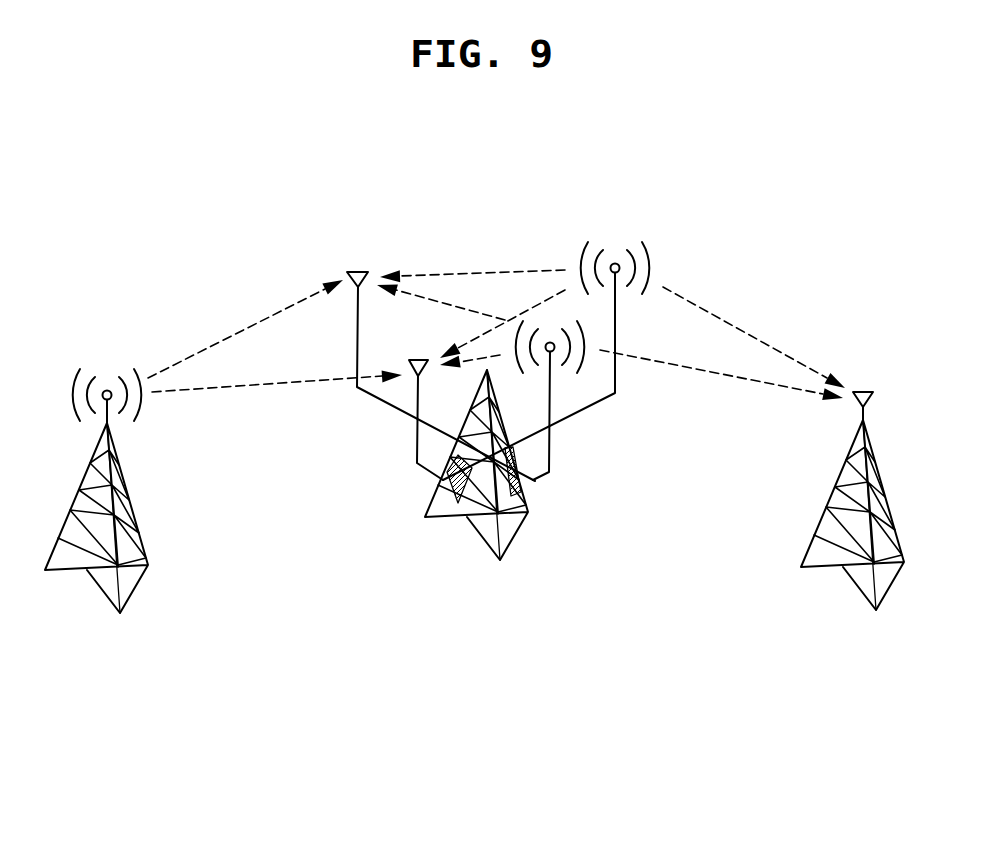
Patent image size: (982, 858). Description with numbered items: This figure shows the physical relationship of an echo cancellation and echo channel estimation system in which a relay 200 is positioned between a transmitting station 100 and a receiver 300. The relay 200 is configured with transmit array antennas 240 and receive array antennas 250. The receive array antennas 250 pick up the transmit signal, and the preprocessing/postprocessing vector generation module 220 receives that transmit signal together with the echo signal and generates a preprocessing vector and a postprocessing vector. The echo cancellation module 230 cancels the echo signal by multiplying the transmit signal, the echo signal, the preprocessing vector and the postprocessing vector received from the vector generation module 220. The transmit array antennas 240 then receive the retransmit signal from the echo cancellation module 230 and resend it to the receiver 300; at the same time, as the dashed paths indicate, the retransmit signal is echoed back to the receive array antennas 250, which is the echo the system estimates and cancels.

The base station 100 is at (100, 590).
The relay 200 is at (477, 535).
The receiver 300 is at (852, 587).
The preprocessing/postprocessing vector generation module 220 is at (437, 483).
The echo cancellation module 230 is at (520, 477).
The transmit array antennas 240 is at (545, 320).
The receive array antennas 250 is at (418, 360).